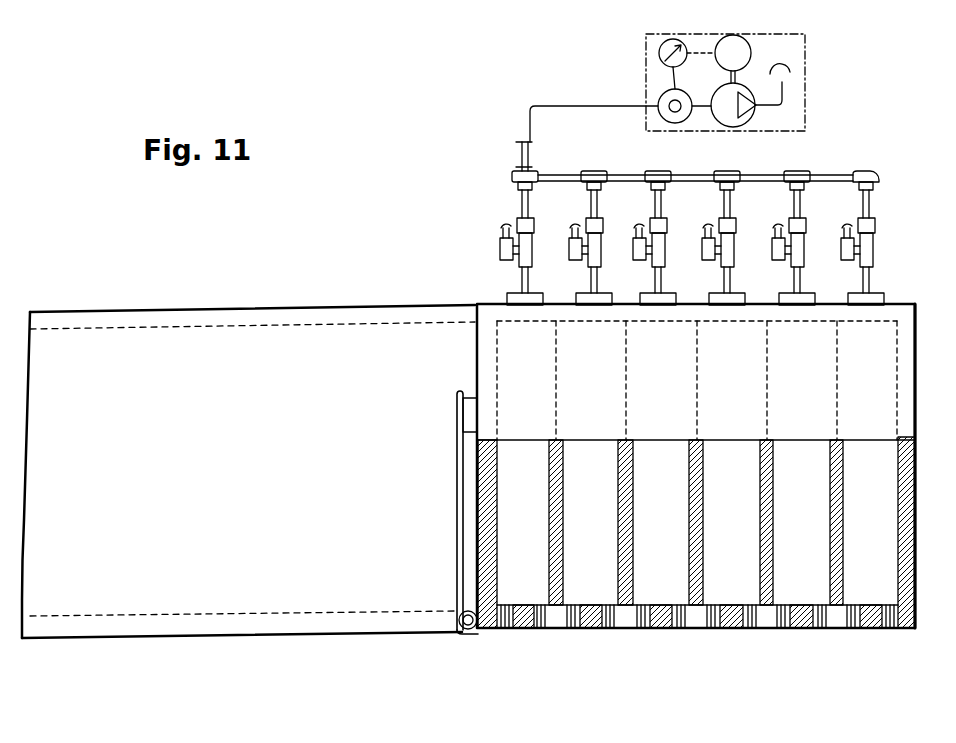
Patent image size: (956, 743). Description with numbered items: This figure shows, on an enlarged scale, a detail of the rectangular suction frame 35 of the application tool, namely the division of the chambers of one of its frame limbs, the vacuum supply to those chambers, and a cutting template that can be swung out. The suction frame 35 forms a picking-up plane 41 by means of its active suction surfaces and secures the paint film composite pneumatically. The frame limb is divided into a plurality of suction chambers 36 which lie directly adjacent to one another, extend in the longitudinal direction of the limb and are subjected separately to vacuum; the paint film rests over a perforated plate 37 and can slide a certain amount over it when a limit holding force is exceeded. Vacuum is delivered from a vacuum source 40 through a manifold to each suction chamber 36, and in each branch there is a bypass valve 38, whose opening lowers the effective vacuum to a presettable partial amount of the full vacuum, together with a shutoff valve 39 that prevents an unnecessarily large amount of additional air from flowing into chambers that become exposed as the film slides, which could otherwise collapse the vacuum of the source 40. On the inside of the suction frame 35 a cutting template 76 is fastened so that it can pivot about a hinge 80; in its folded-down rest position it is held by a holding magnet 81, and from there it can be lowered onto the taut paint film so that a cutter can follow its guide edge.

The suction frame 35 is at (158, 482).
The suction chambers 36 is at (870, 450).
The perforated plate 37 is at (660, 622).
The bypass valve 38 is at (633, 262).
The shutoff valve 39 is at (652, 220).
The vacuum source 40 is at (645, 72).
The picking-up plane 41 is at (210, 637).
The cutting template 76 is at (457, 477).
The hinge 80 is at (462, 636).
The holding magnet 81 is at (473, 398).